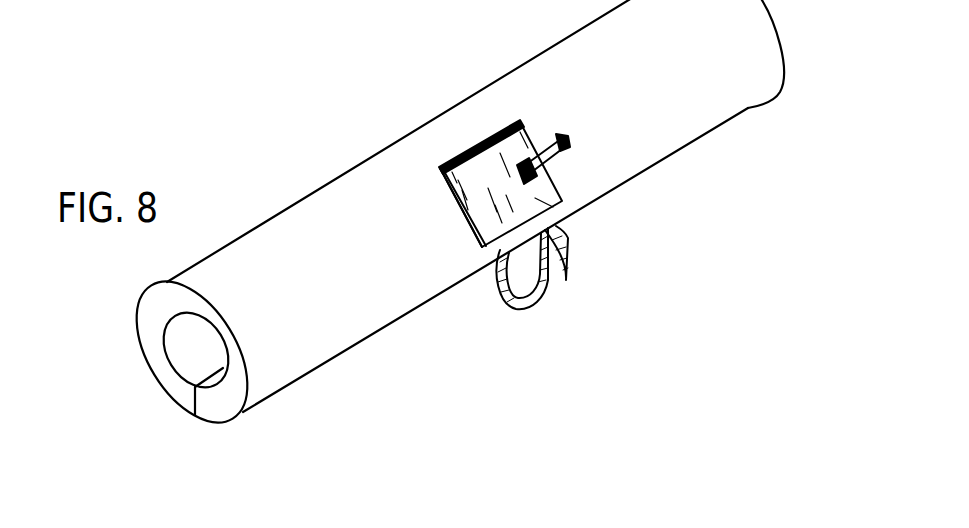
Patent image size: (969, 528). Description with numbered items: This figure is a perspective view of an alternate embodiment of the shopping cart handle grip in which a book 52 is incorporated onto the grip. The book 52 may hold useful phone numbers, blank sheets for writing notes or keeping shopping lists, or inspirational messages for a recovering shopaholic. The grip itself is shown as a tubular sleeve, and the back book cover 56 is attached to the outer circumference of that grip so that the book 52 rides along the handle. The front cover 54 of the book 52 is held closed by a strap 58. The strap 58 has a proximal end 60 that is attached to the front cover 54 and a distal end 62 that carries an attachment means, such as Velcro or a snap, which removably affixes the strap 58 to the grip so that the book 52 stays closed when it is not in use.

The book 52 is at (477, 235).
The front cover 54 is at (552, 173).
The back book cover 56 is at (450, 158).
The strap 58 is at (531, 128).
The proximal end 60 is at (547, 168).
The distal end 62 is at (567, 143).